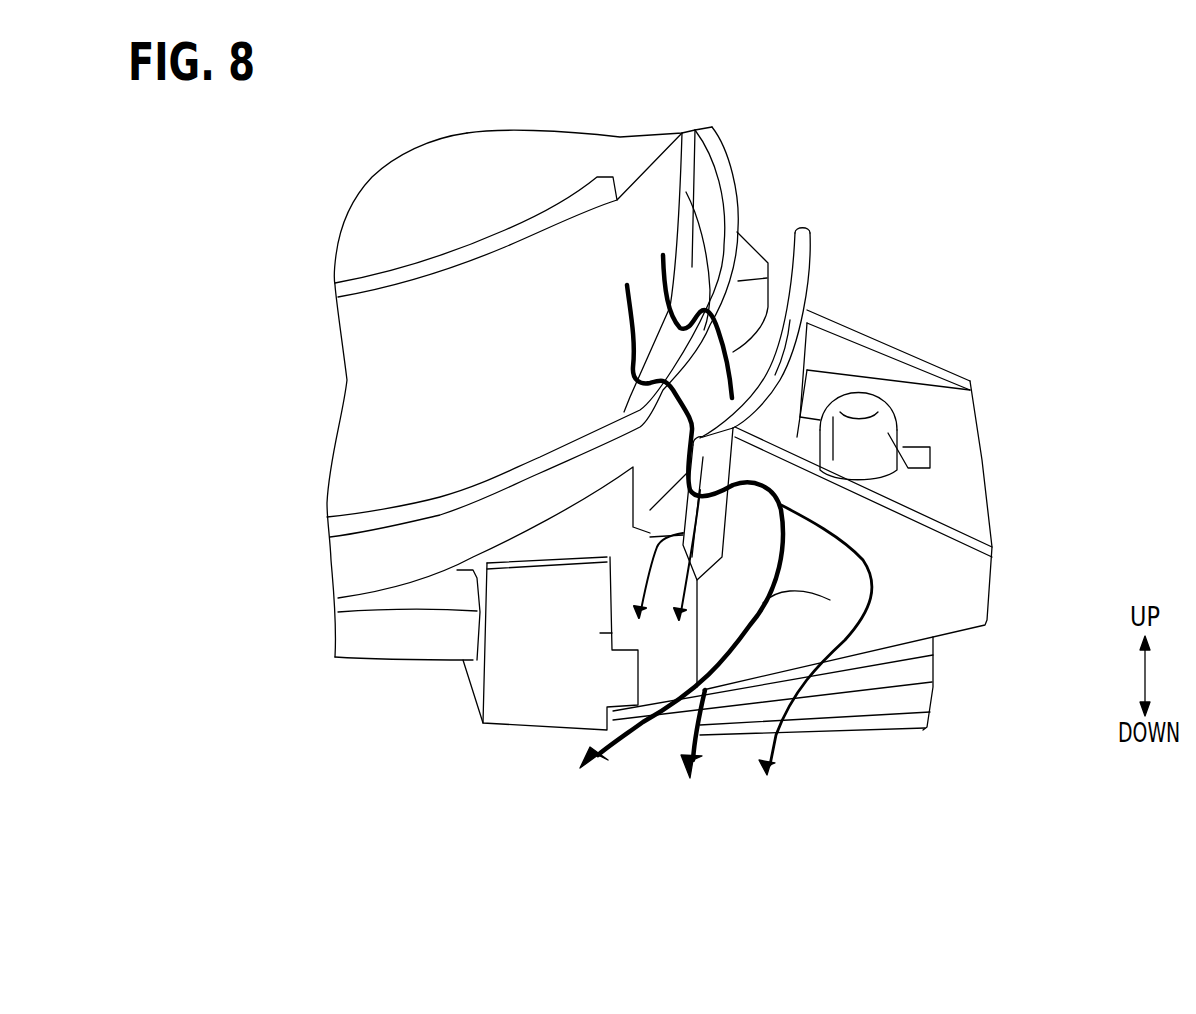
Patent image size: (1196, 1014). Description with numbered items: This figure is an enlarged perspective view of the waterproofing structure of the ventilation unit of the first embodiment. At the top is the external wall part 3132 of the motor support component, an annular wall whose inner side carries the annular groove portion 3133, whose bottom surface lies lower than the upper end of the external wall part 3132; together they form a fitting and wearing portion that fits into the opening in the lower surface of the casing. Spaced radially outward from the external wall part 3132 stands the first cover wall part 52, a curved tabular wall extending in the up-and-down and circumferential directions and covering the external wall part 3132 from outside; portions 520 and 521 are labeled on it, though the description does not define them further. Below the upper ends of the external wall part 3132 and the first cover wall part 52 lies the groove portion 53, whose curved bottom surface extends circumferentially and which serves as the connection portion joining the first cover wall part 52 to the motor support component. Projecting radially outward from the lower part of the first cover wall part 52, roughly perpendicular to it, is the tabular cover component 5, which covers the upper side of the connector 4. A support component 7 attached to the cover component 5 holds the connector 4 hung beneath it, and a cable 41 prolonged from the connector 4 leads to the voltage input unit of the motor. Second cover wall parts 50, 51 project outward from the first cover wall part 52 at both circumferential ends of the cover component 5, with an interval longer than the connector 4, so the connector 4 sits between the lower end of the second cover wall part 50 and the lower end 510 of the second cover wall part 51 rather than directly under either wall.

The annular groove portion 3133 is at (686, 194).
The external wall part 3132 is at (730, 205).
The arm tip 520 is at (803, 233).
The first cover wall part 52 is at (805, 278).
The second cover wall part 50 is at (860, 327).
The support component 7 is at (863, 400).
The cover component 5 is at (947, 427).
The blade 521 is at (693, 467).
The second cover wall part 51 is at (900, 503).
The cable 41 is at (392, 647).
The groove portion 53 is at (667, 517).
The lower end of second cover wall part 510 is at (752, 682).
The connector 4 is at (887, 720).